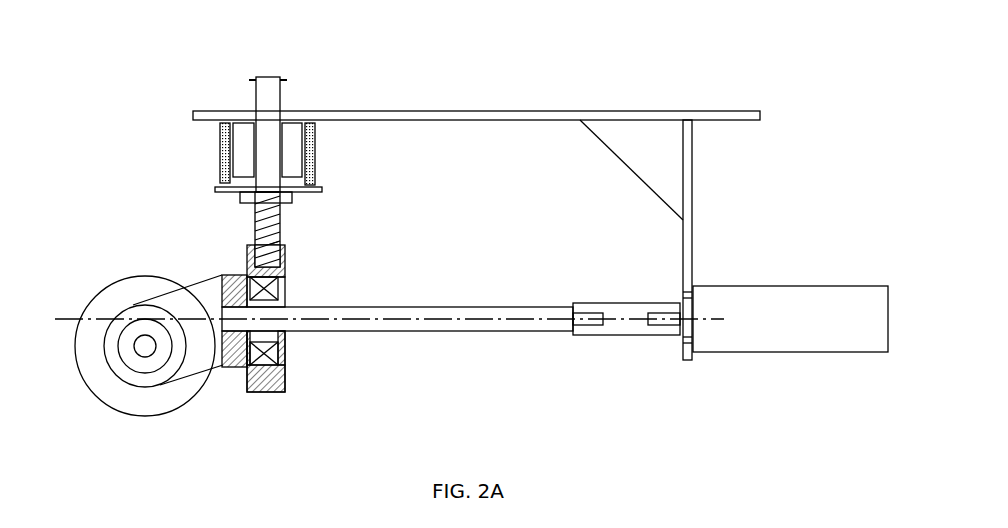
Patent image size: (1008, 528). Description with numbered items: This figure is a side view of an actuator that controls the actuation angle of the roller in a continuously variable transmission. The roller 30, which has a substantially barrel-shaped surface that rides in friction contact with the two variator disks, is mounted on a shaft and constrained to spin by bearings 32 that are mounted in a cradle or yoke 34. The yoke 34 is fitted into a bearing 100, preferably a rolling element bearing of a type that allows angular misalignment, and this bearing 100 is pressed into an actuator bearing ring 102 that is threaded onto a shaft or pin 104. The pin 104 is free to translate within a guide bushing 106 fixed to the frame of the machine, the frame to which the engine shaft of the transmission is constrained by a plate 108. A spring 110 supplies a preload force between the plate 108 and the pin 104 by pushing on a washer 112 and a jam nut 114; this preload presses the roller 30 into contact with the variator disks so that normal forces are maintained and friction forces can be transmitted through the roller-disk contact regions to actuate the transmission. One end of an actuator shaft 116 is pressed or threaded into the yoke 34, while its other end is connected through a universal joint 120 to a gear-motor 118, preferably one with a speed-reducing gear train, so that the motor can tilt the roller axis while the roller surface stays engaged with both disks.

The roller 30 is at (130, 287).
The bearings 32 is at (127, 330).
The yoke 34 is at (223, 365).
The bearing 100 is at (287, 348).
The actuator bearing ring 102 is at (292, 387).
The pin 104 is at (265, 227).
The guide bushing 106 is at (242, 152).
The plate 108 is at (402, 110).
The spring 110 is at (320, 142).
The washer 112 is at (325, 192).
The jam nut 114 is at (294, 200).
The actuator shaft 116 is at (460, 333).
The gear-motor 118 is at (797, 273).
The universal joint 120 is at (625, 348).